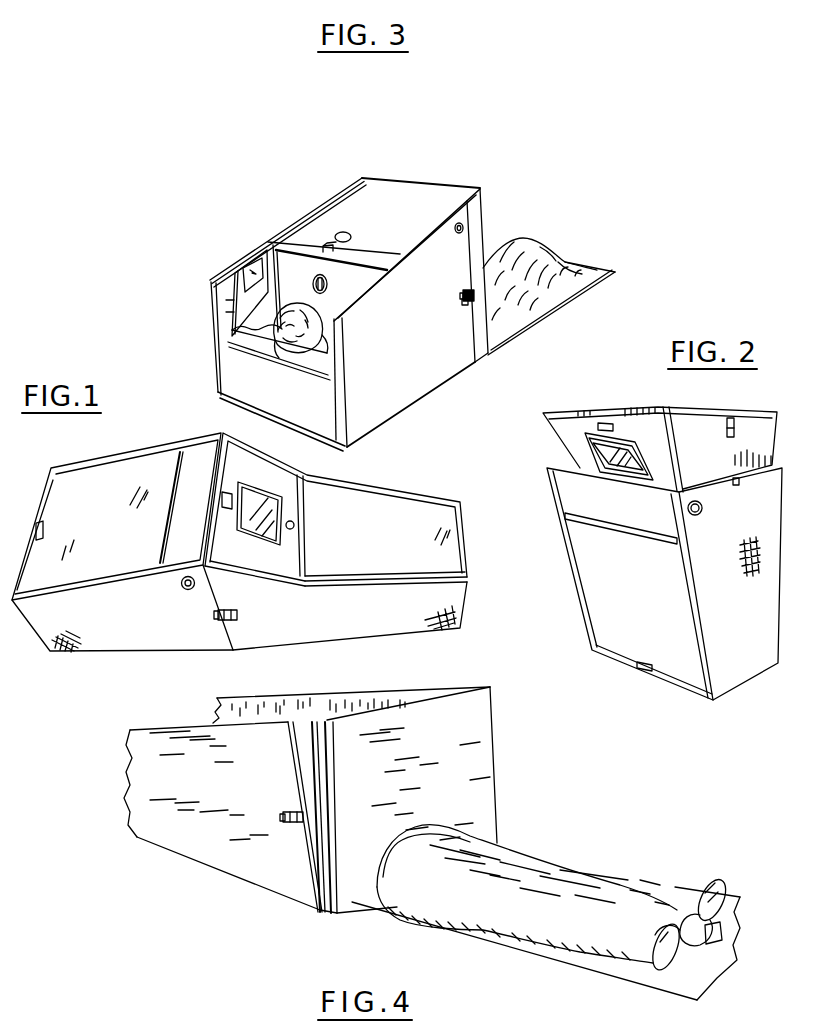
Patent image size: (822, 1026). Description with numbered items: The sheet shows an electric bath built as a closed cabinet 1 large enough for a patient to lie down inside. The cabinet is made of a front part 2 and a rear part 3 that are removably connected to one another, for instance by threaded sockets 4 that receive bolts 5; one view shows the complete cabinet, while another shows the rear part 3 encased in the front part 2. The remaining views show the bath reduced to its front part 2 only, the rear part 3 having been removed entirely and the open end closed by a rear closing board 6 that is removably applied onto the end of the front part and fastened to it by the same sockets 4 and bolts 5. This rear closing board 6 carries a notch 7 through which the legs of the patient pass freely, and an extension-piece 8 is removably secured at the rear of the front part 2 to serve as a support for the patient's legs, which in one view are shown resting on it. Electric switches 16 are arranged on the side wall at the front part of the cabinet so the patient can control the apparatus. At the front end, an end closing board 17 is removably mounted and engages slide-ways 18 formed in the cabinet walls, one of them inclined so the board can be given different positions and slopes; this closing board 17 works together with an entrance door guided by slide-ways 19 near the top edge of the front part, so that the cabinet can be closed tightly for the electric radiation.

In FIG. 3, the closed cabinet 1 is at (450, 355).
In FIG. 1, the closed cabinet 1 is at (273, 637).
In FIG. 3, the front part 2 is at (423, 383).
In FIG. 1, the front part 2 is at (125, 640).
In FIG. 2, the front part 2 is at (755, 655).
In FIG. 1, the rear part 3 is at (403, 508).
In FIG. 2, the rear part 3 is at (573, 428).
In FIG. 3, the threaded sockets 4 is at (472, 289).
In FIG. 1, the threaded sockets 4 is at (240, 615).
In FIG. 2, the threaded sockets 4 is at (734, 430).
In FIG. 4, the threaded sockets 4 is at (297, 823).
In FIG. 3, the bolts 5 is at (470, 302).
In FIG. 1, the bolts 5 is at (218, 616).
In FIG. 2, the bolts 5 is at (739, 484).
In FIG. 4, the bolts 5 is at (283, 823).
In FIG. 4, the rear closing board 6 is at (458, 745).
In FIG. 4, the notch 7 is at (442, 825).
In FIG. 3, the extension-piece 8 is at (597, 267).
In FIG. 4, the extension-piece 8 is at (671, 889).
In FIG. 3, the electric switches 16 is at (234, 273).
In FIG. 3, the end closing board 17 is at (292, 273).
In FIG. 3, the slide-ways 18 is at (232, 305).
In FIG. 3, the slide-ways of the entrance door 19 is at (402, 197).